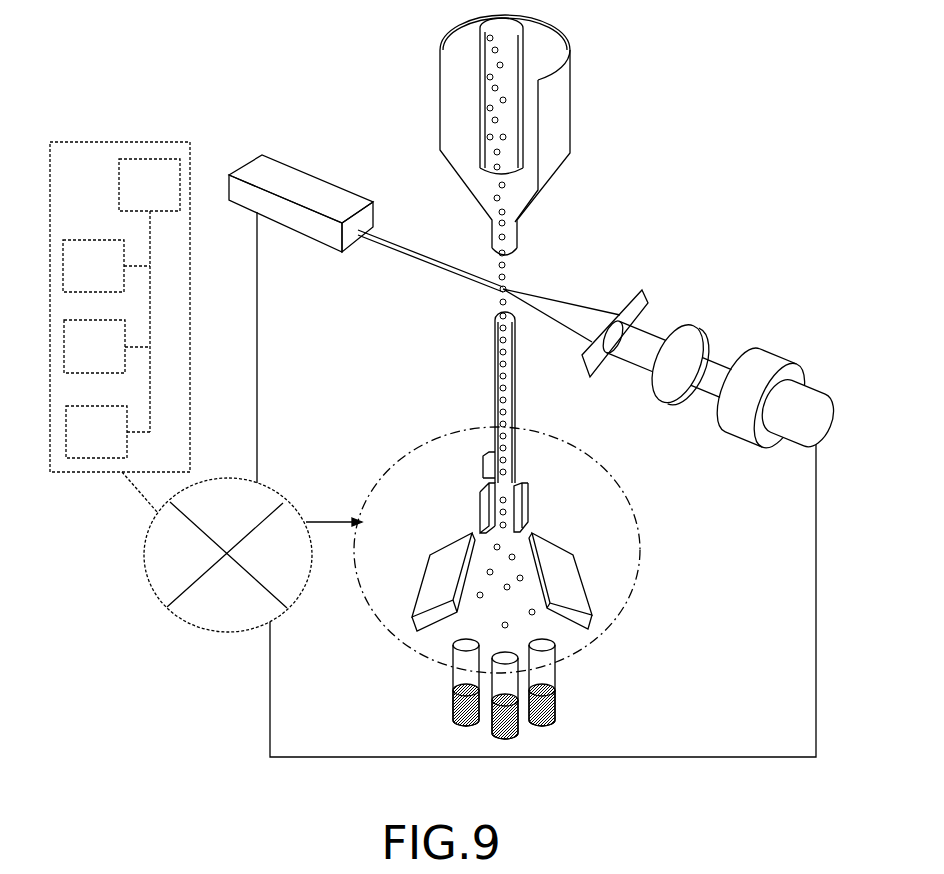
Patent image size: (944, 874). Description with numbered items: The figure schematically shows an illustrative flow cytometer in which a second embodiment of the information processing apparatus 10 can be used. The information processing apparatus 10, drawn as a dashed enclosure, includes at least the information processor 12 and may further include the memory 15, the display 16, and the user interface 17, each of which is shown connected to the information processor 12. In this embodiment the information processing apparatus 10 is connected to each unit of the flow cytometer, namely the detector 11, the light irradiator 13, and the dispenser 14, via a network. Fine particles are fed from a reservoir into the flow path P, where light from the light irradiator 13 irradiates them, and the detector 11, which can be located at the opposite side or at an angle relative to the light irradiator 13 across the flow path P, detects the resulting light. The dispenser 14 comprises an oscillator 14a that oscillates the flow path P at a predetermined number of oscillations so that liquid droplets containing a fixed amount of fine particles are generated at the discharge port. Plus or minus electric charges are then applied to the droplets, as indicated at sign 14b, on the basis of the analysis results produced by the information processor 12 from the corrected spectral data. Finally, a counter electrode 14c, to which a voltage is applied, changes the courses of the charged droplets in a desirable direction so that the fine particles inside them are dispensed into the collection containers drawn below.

The information processing apparatus 10 is at (155, 135).
The detector 11 is at (291, 174).
The information processor 12 is at (149, 185).
The light irradiator 13 is at (806, 392).
The dispenser 14 is at (612, 508).
The oscillator 14a is at (487, 470).
The charging of liquid droplets 14b is at (481, 512).
The counter electrode 14c is at (568, 585).
The memory 15 is at (93, 266).
The display 16 is at (94, 346).
The user interface 17 is at (96, 432).
The flow path P is at (500, 377).